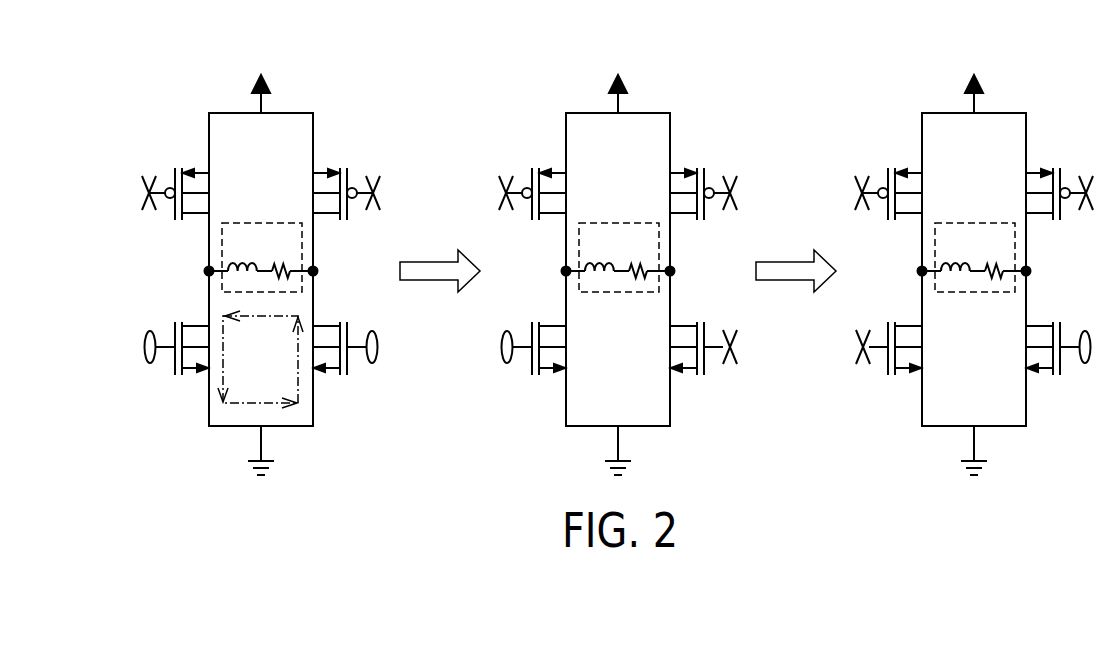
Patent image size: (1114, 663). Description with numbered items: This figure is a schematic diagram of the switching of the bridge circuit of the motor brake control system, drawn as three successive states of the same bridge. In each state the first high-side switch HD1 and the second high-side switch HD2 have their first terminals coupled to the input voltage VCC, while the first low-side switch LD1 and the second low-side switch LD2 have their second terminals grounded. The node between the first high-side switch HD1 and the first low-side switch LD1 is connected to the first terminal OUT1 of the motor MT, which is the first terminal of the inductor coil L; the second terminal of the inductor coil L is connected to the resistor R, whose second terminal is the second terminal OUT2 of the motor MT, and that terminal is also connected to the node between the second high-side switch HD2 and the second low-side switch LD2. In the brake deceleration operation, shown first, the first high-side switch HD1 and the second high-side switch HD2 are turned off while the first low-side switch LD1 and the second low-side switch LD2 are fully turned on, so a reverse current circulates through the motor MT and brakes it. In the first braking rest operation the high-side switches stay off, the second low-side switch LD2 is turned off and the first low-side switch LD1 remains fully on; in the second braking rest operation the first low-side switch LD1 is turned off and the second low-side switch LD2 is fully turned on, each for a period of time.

The input voltage VCC is at (616, 74).
The first high-side switch HD1 is at (532, 175).
The second high-side switch HD2 is at (703, 175).
The first low-side switch LD1 is at (534, 366).
The second low-side switch LD2 is at (702, 366).
The first terminal of the motor OUT1 is at (543, 270).
The second terminal of the motor OUT2 is at (692, 270).
The motor MT is at (253, 223).
The inductor coil L is at (599, 250).
The resistor R is at (637, 253).